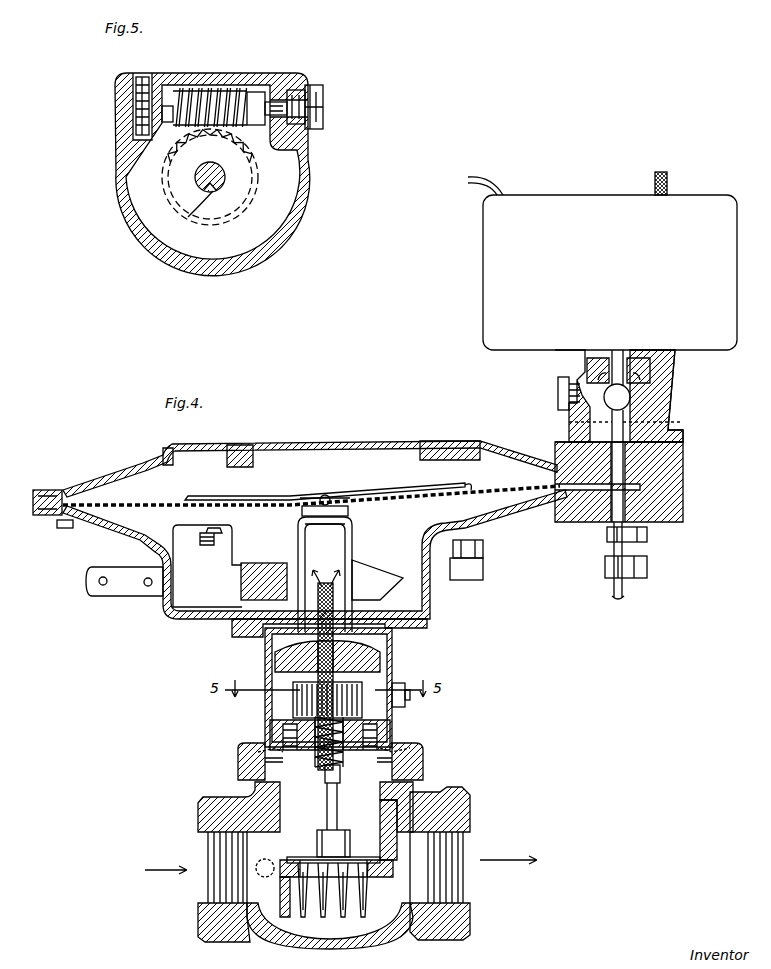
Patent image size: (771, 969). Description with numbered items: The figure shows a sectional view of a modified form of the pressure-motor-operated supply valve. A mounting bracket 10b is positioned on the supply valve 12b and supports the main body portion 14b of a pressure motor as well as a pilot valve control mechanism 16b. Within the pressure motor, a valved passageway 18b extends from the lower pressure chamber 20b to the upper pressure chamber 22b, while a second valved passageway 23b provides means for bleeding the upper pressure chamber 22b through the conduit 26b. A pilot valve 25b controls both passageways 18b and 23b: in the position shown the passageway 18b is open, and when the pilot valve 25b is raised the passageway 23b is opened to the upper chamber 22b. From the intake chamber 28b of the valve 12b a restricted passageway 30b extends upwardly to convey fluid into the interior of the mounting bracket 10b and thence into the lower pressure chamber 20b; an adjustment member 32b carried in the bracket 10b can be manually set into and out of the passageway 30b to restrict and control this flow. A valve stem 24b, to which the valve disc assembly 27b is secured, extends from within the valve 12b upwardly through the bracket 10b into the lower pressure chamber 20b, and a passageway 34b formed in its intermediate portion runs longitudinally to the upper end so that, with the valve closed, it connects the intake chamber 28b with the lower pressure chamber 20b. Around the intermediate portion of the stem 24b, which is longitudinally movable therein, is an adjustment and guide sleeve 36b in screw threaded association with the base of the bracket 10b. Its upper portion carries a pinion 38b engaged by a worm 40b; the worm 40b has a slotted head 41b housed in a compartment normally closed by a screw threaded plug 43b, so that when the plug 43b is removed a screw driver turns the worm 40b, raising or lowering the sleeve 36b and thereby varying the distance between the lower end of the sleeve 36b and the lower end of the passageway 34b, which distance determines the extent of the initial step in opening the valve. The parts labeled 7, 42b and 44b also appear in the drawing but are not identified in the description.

In FIG. 4, the valve stem 7 is at (345, 620).
In FIG. 4, the mounting bracket 10b is at (393, 654).
In FIG. 4, the supply valve 12b is at (448, 795).
In FIG. 4, the main body portion 14b is at (164, 623).
In FIG. 4, the pilot valve control mechanism 16b is at (672, 378).
In FIG. 4, the valved passageway 18b is at (565, 445).
In FIG. 4, the lower pressure chamber 20b is at (415, 532).
In FIG. 4, the upper pressure chamber 22b is at (392, 480).
In FIG. 4, the valved passageway 23b is at (667, 466).
In FIG. 4, the valve stem 24b is at (327, 814).
In FIG. 4, the pilot valve 25b is at (631, 397).
In FIG. 4, the conduit 26b is at (649, 566).
In FIG. 4, the valve disc assembly 27b is at (350, 850).
In FIG. 4, the intake chamber 28b is at (305, 845).
In FIG. 5, the restricted passageway 30b is at (118, 152).
In FIG. 4, the restricted passageway 30b is at (270, 729).
In FIG. 5, the adjustment member 32b is at (134, 122).
In FIG. 5, the passageway 34b is at (196, 216).
In FIG. 4, the passageway 34b is at (339, 795).
In FIG. 4, the adjustment and guide sleeve 36b is at (341, 776).
In FIG. 5, the pinion 38b is at (228, 222).
In FIG. 5, the worm 40b is at (212, 96).
In FIG. 4, the worm 40b is at (327, 700).
In FIG. 5, the slotted head 41b is at (322, 95).
In FIG. 4, the yoke 42b is at (480, 500).
In FIG. 5, the screw threaded plug 43b is at (325, 118).
In FIG. 5, the shaft 44b is at (210, 162).